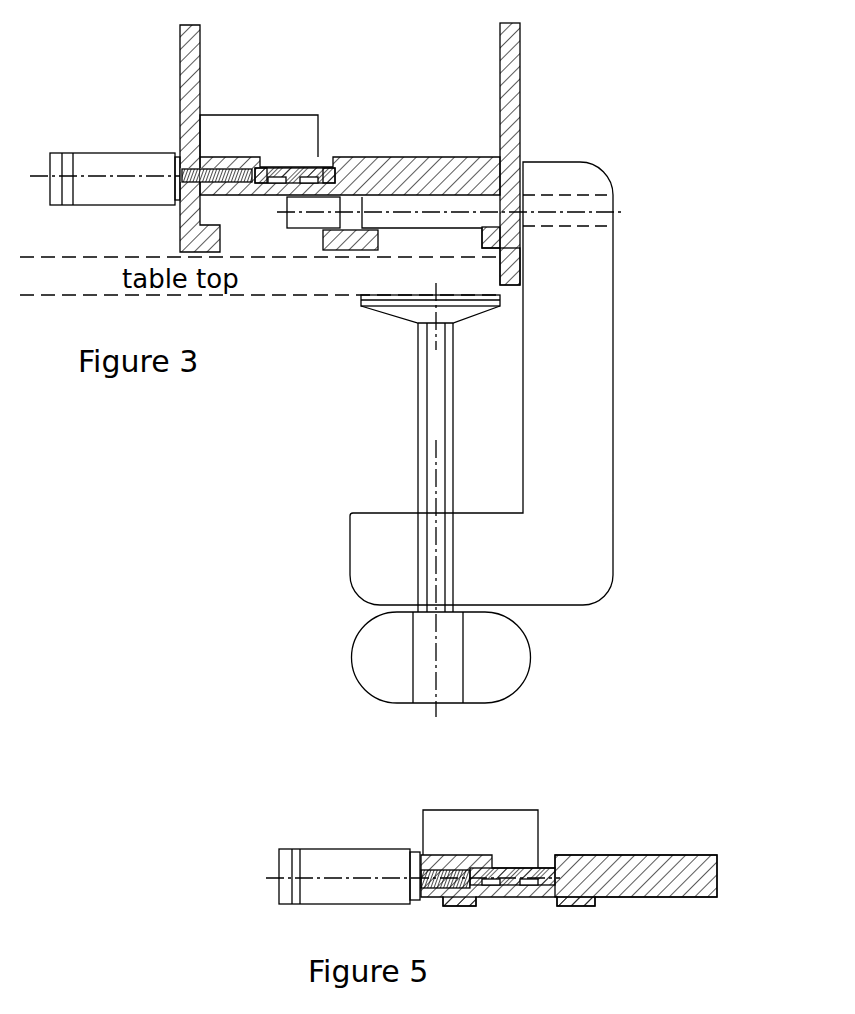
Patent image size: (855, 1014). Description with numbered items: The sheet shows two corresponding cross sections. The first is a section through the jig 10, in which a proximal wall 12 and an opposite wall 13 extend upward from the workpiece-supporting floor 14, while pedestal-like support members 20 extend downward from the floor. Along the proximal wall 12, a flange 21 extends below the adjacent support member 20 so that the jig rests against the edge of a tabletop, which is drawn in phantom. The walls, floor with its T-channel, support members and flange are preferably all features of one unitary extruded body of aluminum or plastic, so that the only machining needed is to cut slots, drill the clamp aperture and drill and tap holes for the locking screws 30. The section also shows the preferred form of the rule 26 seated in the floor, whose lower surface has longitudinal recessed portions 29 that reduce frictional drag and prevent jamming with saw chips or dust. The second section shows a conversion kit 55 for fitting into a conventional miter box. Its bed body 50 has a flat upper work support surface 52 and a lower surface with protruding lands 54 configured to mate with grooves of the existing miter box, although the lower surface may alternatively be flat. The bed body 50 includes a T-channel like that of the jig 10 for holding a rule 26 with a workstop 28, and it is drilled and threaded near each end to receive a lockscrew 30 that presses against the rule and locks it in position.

In FIG. 3, the jig 10 is at (637, 126).
In FIG. 3, the proximal wall 12 is at (521, 45).
In FIG. 3, the wall 13 is at (201, 52).
In FIG. 3, the workpiece-supporting floor 14 is at (418, 157).
In FIG. 3, the support members 20 is at (184, 240).
In FIG. 3, the flange 21 is at (521, 266).
In FIG. 3, the rule 26 is at (279, 166).
In FIG. 5, the rule 26 is at (513, 867).
In FIG. 5, the workstop 28 is at (515, 816).
In FIG. 3, the longitudinal recessed portions 29 is at (276, 165).
In FIG. 3, the locking screw 30 is at (76, 152).
In FIG. 5, the locking screw 30 is at (300, 849).
In FIG. 5, the bed body 50 is at (718, 877).
In FIG. 5, the upper work support surface 52 is at (605, 855).
In FIG. 5, the lands 54 is at (458, 907).
In FIG. 5, the conversion kit 55 is at (532, 855).